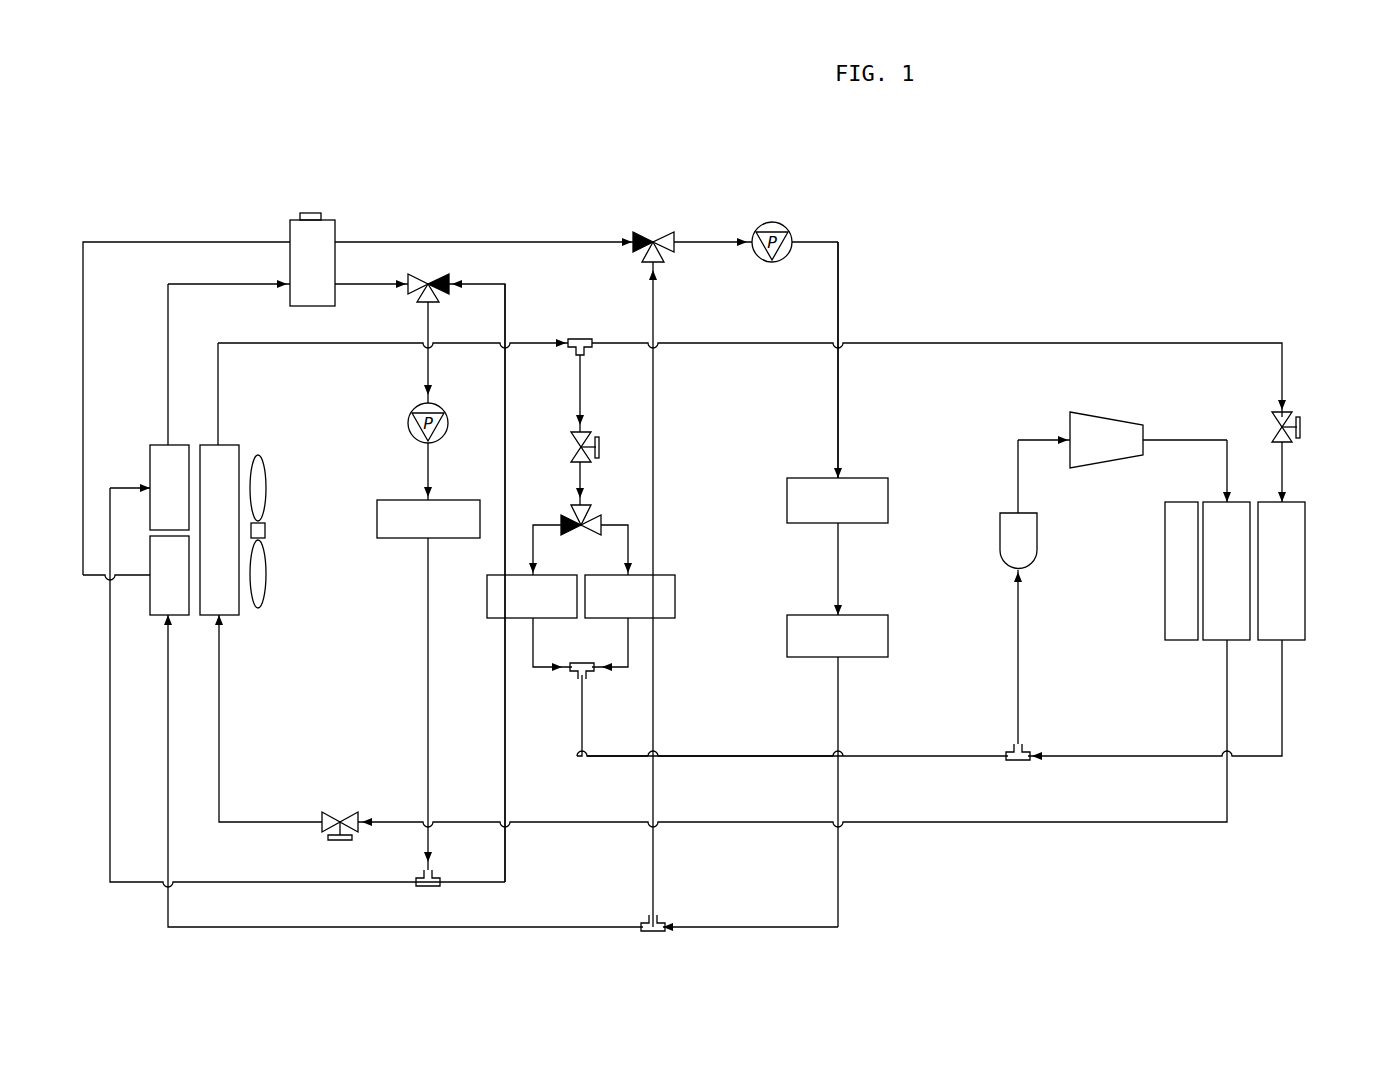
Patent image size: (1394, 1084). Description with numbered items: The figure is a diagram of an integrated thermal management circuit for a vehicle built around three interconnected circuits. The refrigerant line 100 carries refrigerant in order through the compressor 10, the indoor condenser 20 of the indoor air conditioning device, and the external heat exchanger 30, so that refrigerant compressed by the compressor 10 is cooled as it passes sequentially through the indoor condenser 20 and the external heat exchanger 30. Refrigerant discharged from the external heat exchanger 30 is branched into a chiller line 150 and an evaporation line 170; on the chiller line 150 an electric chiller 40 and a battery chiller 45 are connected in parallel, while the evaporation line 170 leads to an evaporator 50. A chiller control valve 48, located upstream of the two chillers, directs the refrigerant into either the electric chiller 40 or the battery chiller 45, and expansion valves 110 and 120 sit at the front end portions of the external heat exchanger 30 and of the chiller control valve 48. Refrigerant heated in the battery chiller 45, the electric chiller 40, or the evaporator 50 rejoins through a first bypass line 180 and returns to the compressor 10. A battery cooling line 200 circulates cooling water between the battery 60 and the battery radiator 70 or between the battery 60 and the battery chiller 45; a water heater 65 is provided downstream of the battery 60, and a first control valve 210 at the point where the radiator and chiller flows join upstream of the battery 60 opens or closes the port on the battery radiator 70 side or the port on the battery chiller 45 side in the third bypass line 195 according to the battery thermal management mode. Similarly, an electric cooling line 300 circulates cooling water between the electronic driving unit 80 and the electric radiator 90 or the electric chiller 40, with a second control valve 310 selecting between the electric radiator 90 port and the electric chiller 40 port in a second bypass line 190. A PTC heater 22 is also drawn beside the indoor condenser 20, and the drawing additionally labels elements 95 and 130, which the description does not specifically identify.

The compressor 10 is at (1117, 420).
The indoor condenser 20 is at (1213, 643).
The PTC heater 22 is at (1165, 605).
The external heat exchanger 30 is at (233, 617).
The electric chiller 40 is at (490, 620).
The battery chiller 45 is at (678, 598).
The chiller control valve 48 is at (592, 520).
The evaporator 50 is at (1268, 643).
The battery 60 is at (890, 500).
The water heater 65 is at (890, 638).
The battery radiator 70 is at (160, 617).
The electronic driving unit 80 is at (395, 500).
The electric radiator 90 is at (157, 445).
The reservoir tank 95 is at (290, 228).
The refrigerant line 100 is at (943, 343).
The expansion valve 110 is at (343, 813).
The expansion valve 120 is at (582, 435).
The expansion valve 130 is at (1272, 425).
The chiller line 150 is at (580, 367).
The evaporation line 170 is at (1285, 455).
The first bypass line 180 is at (1018, 657).
The second bypass line 190 is at (505, 735).
The third bypass line 195 is at (653, 657).
The battery cooling line 200 is at (840, 405).
The first control valve 210 is at (653, 235).
The electric cooling line 300 is at (428, 632).
The second control valve 310 is at (428, 275).